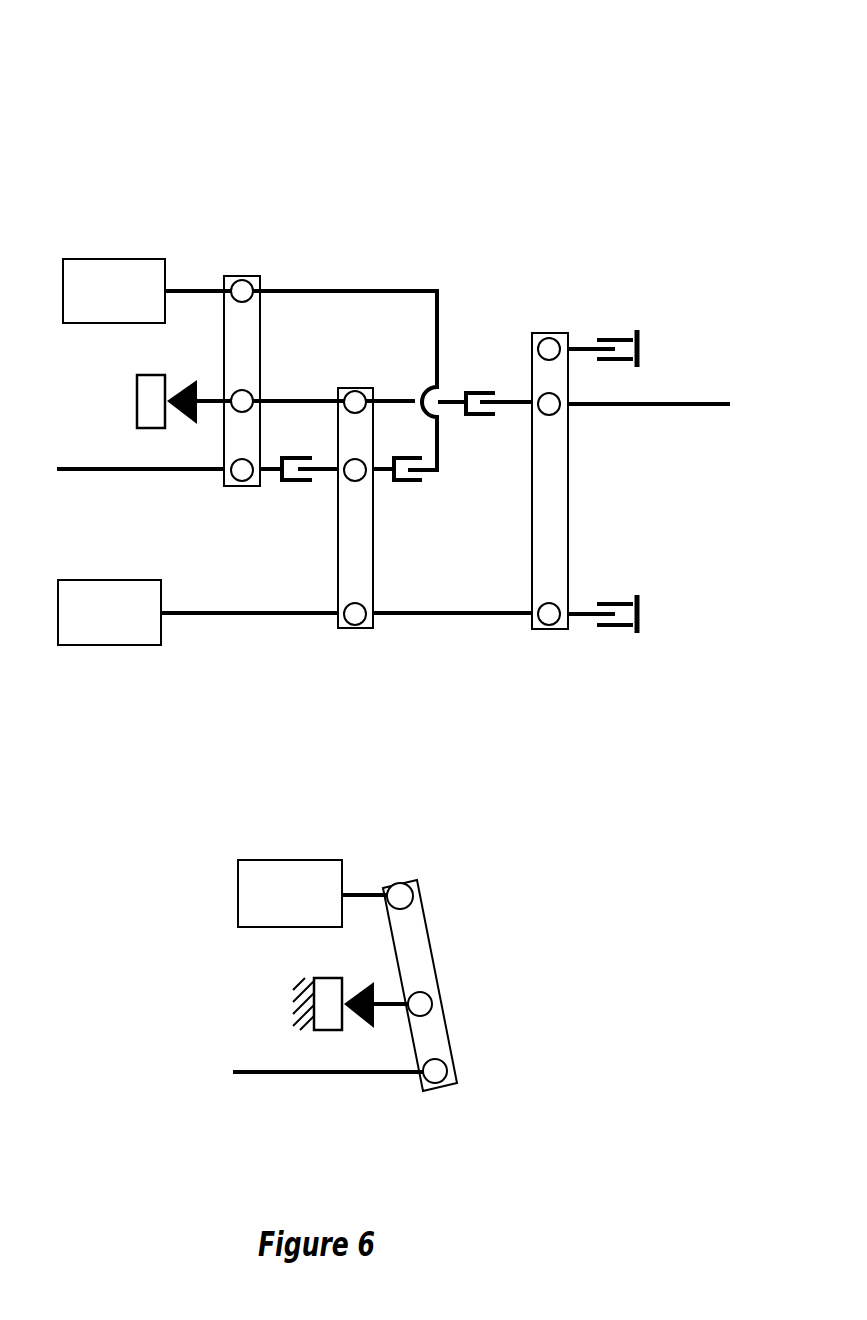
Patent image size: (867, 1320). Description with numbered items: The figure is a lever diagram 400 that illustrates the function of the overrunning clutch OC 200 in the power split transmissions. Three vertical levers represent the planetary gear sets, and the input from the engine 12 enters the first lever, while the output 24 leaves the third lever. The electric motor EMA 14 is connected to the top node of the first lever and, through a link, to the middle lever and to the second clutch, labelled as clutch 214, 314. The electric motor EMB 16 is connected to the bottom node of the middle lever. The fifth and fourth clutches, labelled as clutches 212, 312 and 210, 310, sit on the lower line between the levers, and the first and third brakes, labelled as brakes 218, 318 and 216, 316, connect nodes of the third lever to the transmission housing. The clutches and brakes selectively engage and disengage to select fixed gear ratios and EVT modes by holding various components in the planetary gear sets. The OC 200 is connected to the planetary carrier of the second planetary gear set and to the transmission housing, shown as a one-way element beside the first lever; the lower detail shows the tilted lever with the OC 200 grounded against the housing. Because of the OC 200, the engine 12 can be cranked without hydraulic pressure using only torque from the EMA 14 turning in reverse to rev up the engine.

The lever diagram 400 is at (378, 80).
The EMA 14 is at (125, 259).
The electric motor B (EMB) 16 is at (103, 645).
The overrunning clutch (OC) 200 is at (135, 400).
The engine 12 is at (123, 472).
The output shaft 24 is at (655, 406).
The clutch 214 is at (528, 363).
The clutch 314 is at (478, 365).
The brake 218 is at (659, 308).
The brake 318 is at (622, 290).
The clutch 212 is at (255, 520).
The clutch 312 is at (297, 530).
The clutch 210 is at (446, 518).
The clutch 310 is at (399, 530).
The brake 216 is at (579, 655).
The brake 316 is at (619, 678).